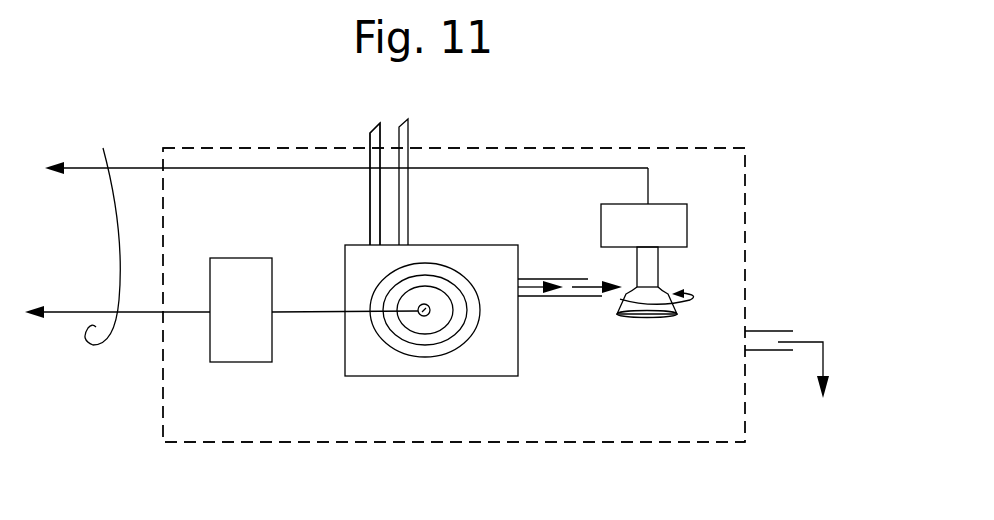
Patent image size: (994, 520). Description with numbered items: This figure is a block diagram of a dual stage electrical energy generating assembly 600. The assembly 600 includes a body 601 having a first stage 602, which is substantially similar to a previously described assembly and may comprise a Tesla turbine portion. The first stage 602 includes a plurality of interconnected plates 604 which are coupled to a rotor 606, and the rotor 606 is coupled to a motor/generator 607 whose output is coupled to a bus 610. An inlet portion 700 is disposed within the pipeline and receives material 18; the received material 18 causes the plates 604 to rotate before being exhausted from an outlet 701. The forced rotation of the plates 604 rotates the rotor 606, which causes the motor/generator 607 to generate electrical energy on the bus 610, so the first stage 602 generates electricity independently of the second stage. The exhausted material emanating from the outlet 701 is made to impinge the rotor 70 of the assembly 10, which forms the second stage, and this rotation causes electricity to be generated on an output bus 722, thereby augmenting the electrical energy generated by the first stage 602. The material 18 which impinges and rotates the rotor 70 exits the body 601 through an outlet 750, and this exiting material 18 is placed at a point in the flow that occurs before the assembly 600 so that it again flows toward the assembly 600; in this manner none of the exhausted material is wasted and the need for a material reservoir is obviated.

The dual stage electrical energy generating assembly 600 is at (680, 113).
The body 601 is at (580, 442).
The first stage 602 is at (453, 226).
The plates 604 is at (453, 370).
The rotor 606 is at (315, 316).
The motor/generator 607 is at (237, 258).
The bus 610 is at (62, 315).
The inlet portion 700 is at (388, 225).
The outlet 701 is at (561, 279).
The output bus 722 is at (567, 168).
The assembly 10 is at (683, 192).
The rotor 70 is at (660, 290).
The outlet 750 is at (808, 341).
The material 18 is at (388, 118).